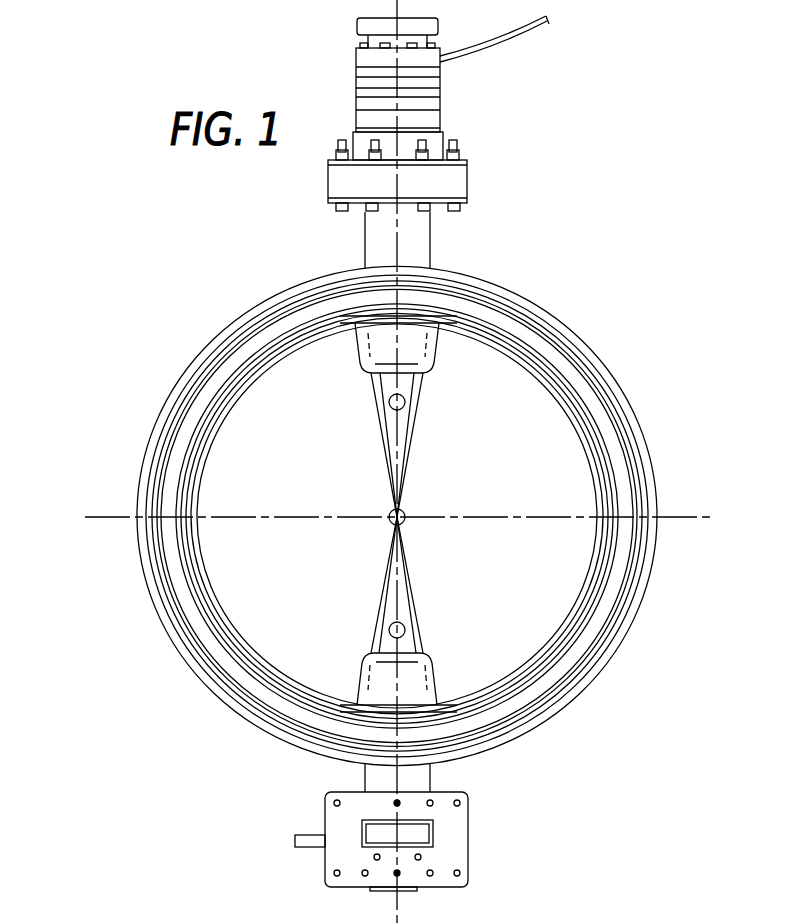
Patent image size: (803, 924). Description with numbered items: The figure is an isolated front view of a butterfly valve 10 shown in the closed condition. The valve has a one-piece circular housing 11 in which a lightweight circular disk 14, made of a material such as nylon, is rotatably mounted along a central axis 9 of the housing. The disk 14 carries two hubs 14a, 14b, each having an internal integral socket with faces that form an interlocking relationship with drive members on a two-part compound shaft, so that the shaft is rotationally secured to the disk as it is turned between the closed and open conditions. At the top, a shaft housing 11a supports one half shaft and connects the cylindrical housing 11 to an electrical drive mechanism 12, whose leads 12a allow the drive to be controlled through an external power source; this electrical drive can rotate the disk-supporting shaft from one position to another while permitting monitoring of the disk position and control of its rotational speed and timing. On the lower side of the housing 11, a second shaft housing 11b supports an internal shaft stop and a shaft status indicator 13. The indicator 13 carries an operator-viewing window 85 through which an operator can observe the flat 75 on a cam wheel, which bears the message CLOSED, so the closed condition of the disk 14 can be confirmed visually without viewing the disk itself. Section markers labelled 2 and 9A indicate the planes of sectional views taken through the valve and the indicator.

The butterfly valve 10 is at (200, 307).
The one-piece circular housing 11 is at (577, 335).
The shaft housing 11a is at (430, 243).
The shaft housing 11b is at (433, 768).
The electrical drive mechanism 12 is at (430, 117).
The leads 12a is at (517, 40).
The shaft status indicator 13 is at (448, 832).
The circular disk 14 is at (282, 650).
The hub 14a is at (432, 343).
The hub 14b is at (430, 683).
The flat 75 is at (380, 823).
The operator-viewing window 85 is at (432, 847).
The section line 2- 2 is at (97, 482).
The central axis 9 is at (363, 0).
The section line 9A- 9A is at (325, 855).